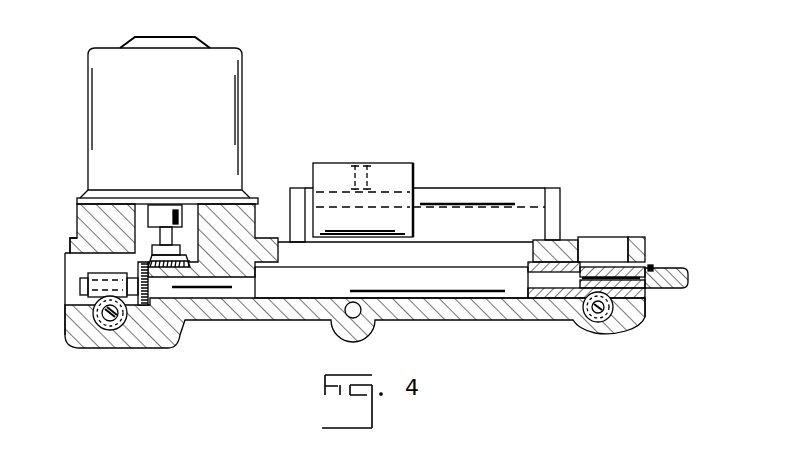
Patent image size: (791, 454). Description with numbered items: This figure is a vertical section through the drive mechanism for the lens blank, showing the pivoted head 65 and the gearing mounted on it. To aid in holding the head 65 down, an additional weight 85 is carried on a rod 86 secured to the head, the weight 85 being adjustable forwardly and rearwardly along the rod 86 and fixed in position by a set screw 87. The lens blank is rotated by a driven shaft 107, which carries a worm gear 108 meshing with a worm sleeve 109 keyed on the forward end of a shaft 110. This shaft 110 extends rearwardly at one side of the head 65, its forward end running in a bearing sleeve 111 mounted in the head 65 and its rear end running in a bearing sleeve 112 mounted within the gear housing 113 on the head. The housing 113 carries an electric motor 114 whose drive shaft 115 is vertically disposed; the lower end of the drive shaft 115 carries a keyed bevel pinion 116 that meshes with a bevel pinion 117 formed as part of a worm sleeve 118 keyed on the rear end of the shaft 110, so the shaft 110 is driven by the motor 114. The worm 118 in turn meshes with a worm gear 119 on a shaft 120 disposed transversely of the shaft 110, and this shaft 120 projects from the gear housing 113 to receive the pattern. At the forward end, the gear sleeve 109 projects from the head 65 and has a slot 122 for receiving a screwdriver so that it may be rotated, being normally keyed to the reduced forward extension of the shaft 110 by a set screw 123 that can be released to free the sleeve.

The head 65 is at (453, 310).
The additional weight 85 is at (395, 170).
The rod 86 is at (465, 197).
The set screw 87 is at (362, 170).
The driven shaft 107 is at (600, 313).
The worm gear 108 is at (633, 322).
The worm sleeve 109 is at (603, 263).
The shaft 110 is at (442, 273).
The bearing sleeve 111 is at (570, 260).
The bearing sleeve 112 is at (213, 240).
The gear housing 113 is at (80, 228).
The electric motor 114 is at (220, 80).
The drive shaft 115 is at (182, 220).
The bevel pinion 116 is at (150, 257).
The bevel pinion 117 is at (138, 303).
The worm sleeve 118 is at (88, 272).
The worm gear 119 is at (97, 307).
The shaft 120 is at (107, 322).
The slot 122 is at (687, 277).
The set screw 123 is at (653, 267).